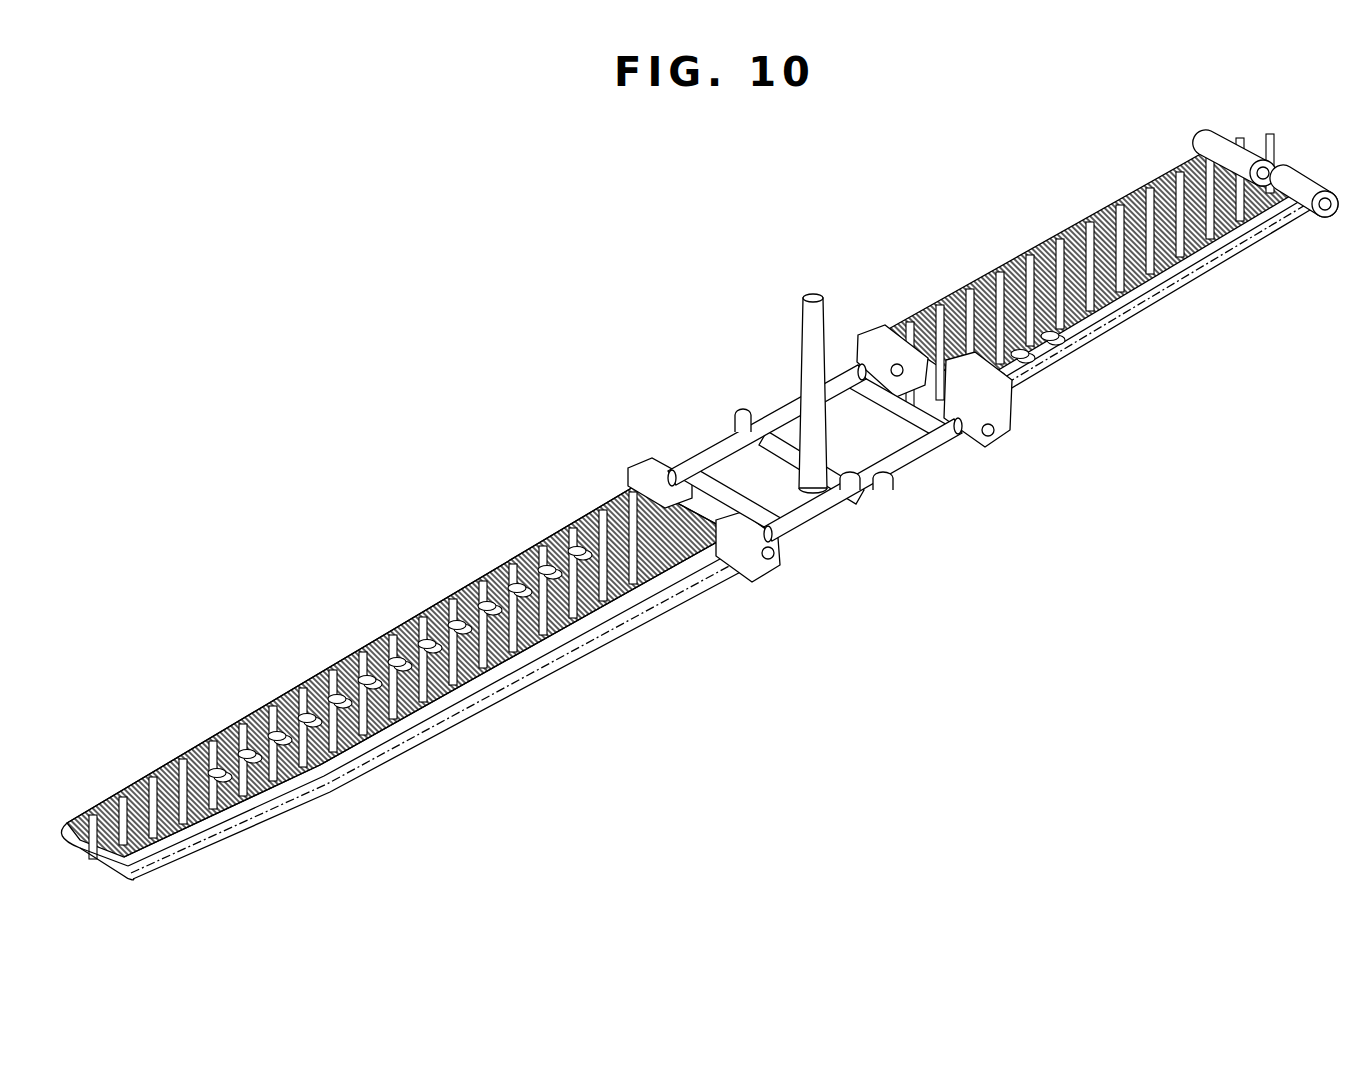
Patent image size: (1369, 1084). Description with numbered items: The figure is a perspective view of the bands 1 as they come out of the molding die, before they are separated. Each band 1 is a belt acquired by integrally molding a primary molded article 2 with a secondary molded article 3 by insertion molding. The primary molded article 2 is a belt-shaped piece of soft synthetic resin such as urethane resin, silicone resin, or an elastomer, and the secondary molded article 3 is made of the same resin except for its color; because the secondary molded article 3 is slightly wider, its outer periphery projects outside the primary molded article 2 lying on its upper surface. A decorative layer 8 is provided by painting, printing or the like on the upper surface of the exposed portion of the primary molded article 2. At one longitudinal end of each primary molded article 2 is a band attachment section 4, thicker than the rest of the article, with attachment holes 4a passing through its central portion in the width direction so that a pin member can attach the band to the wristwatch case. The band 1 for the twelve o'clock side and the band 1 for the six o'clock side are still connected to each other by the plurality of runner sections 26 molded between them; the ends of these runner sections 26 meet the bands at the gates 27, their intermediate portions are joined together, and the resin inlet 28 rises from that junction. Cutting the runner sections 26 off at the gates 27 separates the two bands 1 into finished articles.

The band 1 is at (699, 542).
The primary molded article 2 is at (320, 768).
The secondary molded article 3 is at (380, 752).
The band attachment section 4 is at (634, 470).
The attachment hole 4a is at (898, 366).
The decorative layer 8 is at (412, 632).
The runner section 26 is at (810, 383).
The gate 27 is at (672, 472).
The resin inlet 28 is at (807, 294).